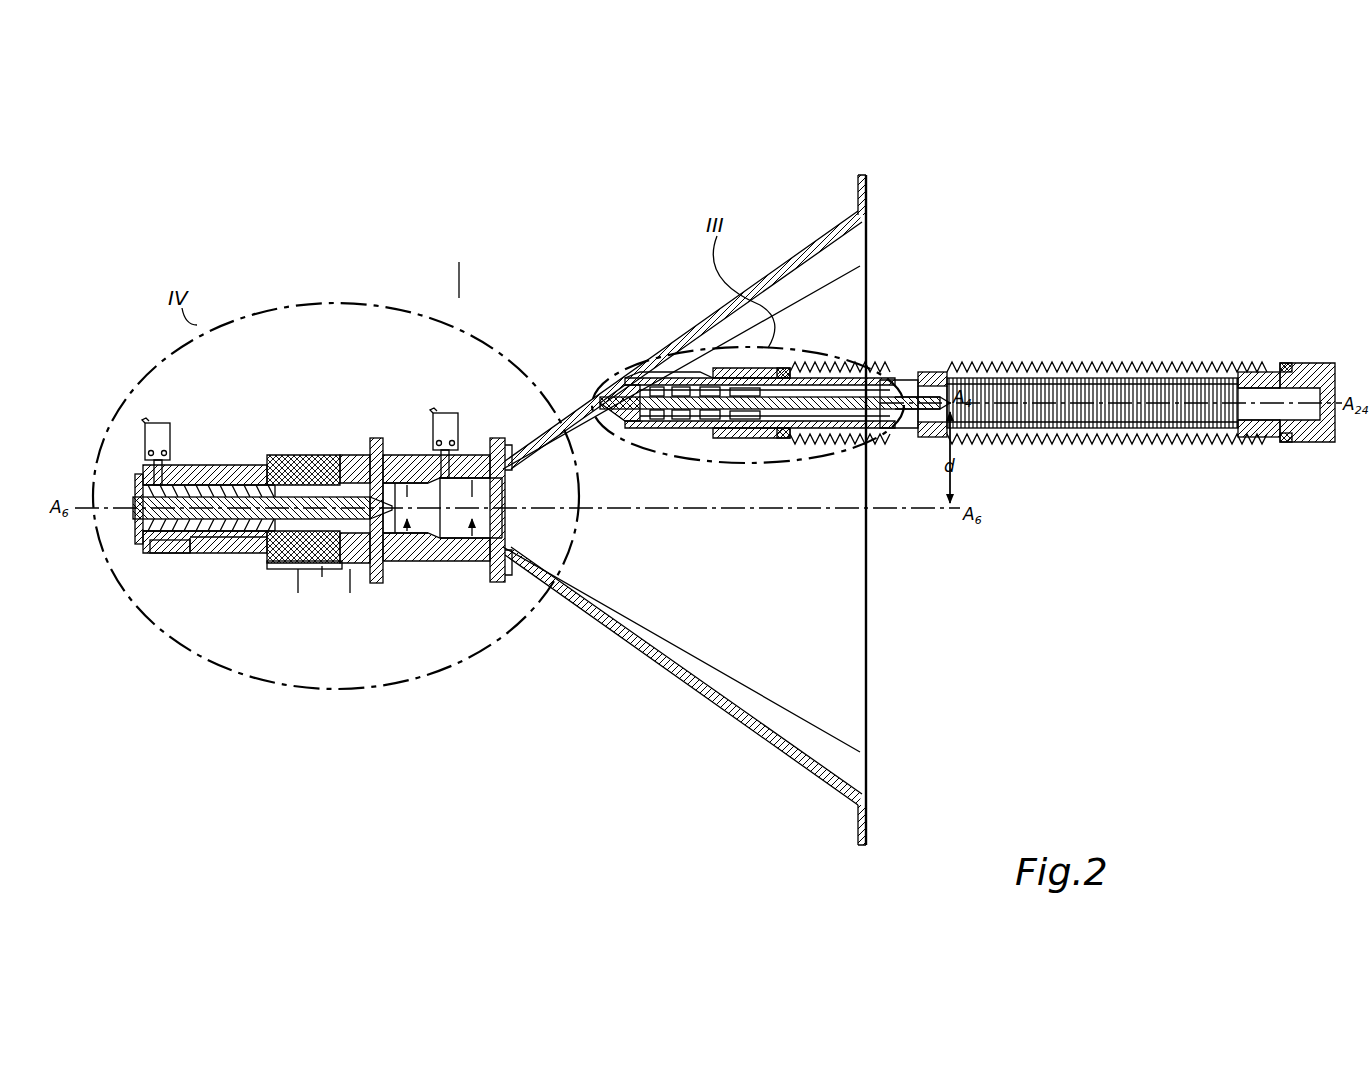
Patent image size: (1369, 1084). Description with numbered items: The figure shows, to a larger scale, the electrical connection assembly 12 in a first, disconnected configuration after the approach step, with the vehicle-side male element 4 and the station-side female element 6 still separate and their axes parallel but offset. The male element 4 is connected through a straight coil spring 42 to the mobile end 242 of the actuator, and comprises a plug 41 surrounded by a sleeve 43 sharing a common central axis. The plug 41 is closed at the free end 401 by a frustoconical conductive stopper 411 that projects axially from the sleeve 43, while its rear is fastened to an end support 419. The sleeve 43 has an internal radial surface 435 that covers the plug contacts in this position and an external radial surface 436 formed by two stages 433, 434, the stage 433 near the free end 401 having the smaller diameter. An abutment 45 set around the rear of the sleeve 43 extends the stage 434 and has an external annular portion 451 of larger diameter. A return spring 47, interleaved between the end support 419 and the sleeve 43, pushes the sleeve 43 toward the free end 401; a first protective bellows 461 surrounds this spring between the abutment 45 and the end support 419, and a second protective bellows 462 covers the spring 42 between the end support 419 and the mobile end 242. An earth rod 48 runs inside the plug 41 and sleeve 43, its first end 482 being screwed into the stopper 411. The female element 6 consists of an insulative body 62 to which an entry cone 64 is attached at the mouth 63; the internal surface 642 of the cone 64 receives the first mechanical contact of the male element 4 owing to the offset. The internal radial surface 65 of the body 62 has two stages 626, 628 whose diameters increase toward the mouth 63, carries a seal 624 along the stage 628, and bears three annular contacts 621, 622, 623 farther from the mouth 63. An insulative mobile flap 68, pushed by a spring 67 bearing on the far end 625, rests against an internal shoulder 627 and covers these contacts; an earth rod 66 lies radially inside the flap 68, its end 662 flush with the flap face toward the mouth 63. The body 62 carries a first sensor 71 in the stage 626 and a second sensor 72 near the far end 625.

The male electrical connection element 4 is at (897, 381).
The female element 6 is at (487, 400).
The electrical connection assembly 12 is at (479, 331).
The plug 41 is at (638, 432).
The straight coil spring 42 is at (1107, 369).
The sleeve 43 is at (707, 430).
The abutment 45 is at (790, 430).
The return spring 47 is at (900, 368).
The earth rod 48 is at (893, 412).
The body 62 is at (310, 510).
The mouth 63 is at (505, 527).
The entry cone 64 is at (625, 640).
The internal radial surface 65 is at (500, 480).
The earth rod 66 is at (135, 480).
The spring 67 is at (172, 560).
The mobile flap 68 is at (236, 562).
The first sensor 71 is at (448, 414).
The second sensor 72 is at (165, 424).
The mobile end 242 is at (1312, 362).
The free end 401 is at (598, 403).
The frustoconical conductive stopper 411 is at (618, 430).
The end support 419 is at (932, 440).
The stage 433 is at (672, 375).
The stage 434 is at (762, 366).
The internal radial surface 435 is at (760, 430).
The external radial surface 436 is at (670, 432).
The external annular portion 451 is at (790, 368).
The first protective bellows 461 is at (932, 370).
The second protective bellows 462 is at (1015, 363).
The first end 482 is at (612, 397).
The electrically conductive contact 621 is at (292, 455).
The electrically conductive contact 622 is at (312, 455).
The electrically conductive contact 623 is at (336, 455).
The seal 624 is at (392, 455).
The far end 625 is at (133, 535).
The stage 626 is at (468, 562).
The internal shoulder 627 is at (250, 477).
The stage 628 is at (392, 563).
The internal surface 642 is at (800, 755).
The end 662 is at (376, 452).